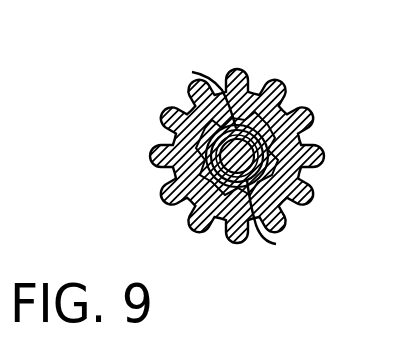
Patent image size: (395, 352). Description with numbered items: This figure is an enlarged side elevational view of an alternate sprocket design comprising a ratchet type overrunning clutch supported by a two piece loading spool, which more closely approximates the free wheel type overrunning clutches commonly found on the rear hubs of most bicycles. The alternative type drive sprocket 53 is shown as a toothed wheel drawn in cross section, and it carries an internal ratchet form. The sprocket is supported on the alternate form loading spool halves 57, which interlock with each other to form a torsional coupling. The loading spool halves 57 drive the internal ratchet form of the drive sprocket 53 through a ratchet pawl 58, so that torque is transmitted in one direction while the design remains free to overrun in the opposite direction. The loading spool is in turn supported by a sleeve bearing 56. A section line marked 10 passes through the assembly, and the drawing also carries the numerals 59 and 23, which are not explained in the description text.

The section line 10- 10 is at (268, 33).
The drive sprocket 53 is at (278, 98).
The hub 59 is at (297, 145).
The loading spool halves 57 is at (268, 174).
The shaft 23 is at (185, 166).
The sleeve bearing 56 is at (190, 199).
The ratchet pawl 58 is at (192, 72).